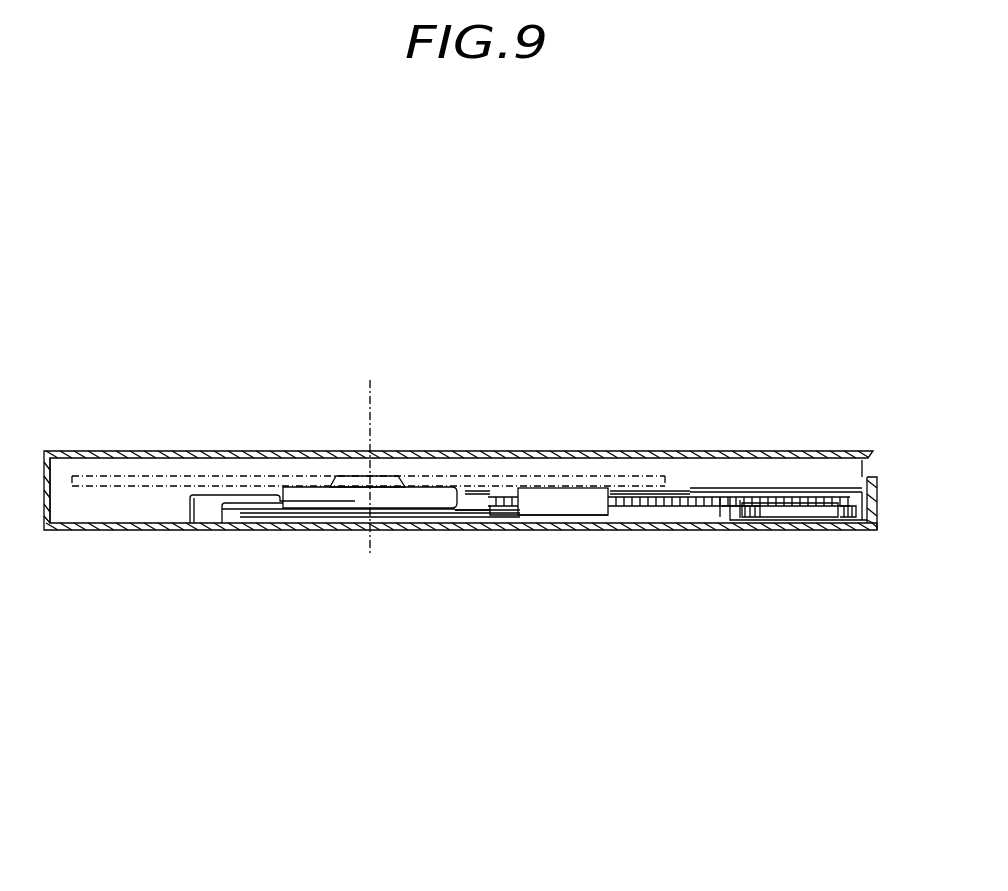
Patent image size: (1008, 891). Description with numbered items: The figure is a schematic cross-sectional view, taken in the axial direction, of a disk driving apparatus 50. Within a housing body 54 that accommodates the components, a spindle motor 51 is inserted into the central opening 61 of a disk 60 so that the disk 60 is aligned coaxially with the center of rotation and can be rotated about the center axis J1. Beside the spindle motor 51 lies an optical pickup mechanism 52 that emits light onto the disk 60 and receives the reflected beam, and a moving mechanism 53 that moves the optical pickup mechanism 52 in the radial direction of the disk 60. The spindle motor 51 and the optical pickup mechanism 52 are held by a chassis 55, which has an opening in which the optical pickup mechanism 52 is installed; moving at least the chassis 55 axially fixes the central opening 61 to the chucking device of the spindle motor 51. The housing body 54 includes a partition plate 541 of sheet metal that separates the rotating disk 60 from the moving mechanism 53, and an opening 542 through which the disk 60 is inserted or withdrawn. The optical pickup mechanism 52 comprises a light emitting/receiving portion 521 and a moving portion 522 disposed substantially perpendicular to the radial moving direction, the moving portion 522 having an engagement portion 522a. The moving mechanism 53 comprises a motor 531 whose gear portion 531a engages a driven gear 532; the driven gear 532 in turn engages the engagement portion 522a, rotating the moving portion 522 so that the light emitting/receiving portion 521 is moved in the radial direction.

The disk driving apparatus 50 is at (106, 328).
The spindle motor 51 is at (273, 508).
The optical pickup mechanism 52 is at (560, 518).
The moving mechanism 53 is at (810, 513).
The housing body 54 is at (224, 437).
The chassis 55 is at (340, 518).
The disk 60 is at (465, 465).
The central opening 61 is at (413, 486).
The center axis J1 is at (368, 408).
The light emitting/receiving portion 521 is at (550, 512).
The moving portion 522 is at (676, 510).
The engagement portion 522a is at (627, 506).
The motor 531 is at (787, 512).
The gear portion 531a is at (812, 497).
The driven gear 532 is at (724, 520).
The partition plate 541 is at (743, 505).
The opening 542 is at (871, 458).